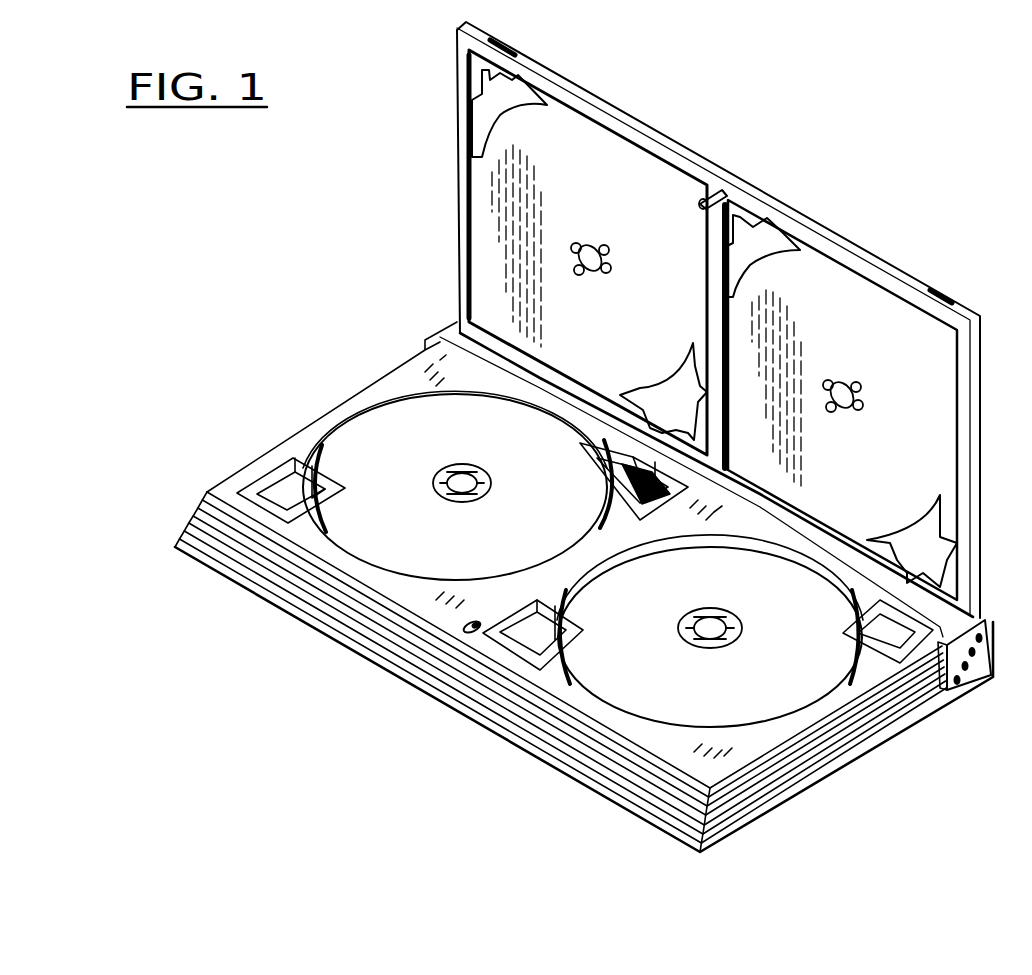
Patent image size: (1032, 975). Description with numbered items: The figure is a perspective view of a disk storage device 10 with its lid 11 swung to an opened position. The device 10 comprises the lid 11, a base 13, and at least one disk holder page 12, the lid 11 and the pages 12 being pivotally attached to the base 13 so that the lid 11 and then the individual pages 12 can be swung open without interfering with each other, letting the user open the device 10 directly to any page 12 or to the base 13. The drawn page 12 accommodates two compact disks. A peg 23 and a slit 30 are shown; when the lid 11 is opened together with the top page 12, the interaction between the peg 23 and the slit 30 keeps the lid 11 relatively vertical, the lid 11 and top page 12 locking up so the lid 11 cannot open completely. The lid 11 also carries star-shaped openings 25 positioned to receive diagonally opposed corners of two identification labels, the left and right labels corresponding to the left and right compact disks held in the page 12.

The disk storage device 10 is at (828, 198).
The lid 11 is at (465, 227).
The disk holder page 12 is at (377, 403).
The base 13 is at (777, 802).
The peg 23 is at (712, 193).
The star-shaped openings 25 is at (503, 100).
The slit 30 is at (466, 630).